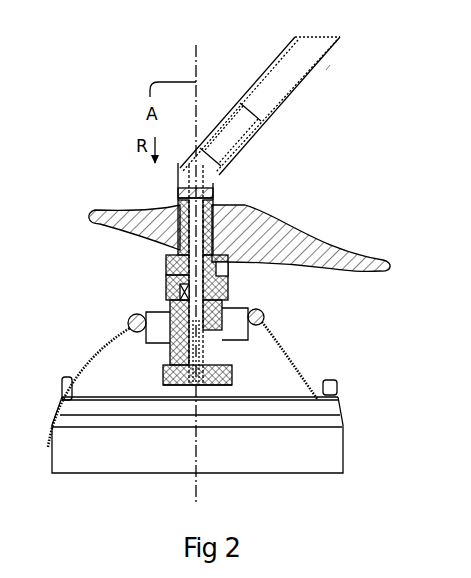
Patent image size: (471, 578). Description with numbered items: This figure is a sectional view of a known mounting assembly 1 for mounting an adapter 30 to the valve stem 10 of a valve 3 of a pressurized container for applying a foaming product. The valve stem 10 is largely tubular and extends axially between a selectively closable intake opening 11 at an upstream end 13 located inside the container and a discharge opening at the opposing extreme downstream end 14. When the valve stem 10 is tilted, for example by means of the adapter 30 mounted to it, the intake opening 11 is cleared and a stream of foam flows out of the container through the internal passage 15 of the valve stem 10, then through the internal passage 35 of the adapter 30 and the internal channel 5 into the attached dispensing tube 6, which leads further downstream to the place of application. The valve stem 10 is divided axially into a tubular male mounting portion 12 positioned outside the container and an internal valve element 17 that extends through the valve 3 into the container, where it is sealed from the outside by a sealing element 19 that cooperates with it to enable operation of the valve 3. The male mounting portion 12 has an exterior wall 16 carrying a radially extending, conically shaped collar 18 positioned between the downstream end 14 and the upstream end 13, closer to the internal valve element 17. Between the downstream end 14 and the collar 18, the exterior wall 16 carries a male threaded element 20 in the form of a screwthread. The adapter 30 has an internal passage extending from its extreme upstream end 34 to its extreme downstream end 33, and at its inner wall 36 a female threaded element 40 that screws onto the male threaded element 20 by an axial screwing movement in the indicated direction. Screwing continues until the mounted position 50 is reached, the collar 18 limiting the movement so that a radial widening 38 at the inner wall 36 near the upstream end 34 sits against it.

The mounting assembly 1 is at (77, 278).
The valve 3 is at (277, 313).
The internal channel 5 is at (272, 90).
The dispensing tube 6 is at (336, 66).
The valve stem 10 is at (177, 332).
The intake opening 11 is at (213, 366).
The male mounting portion 12 is at (176, 250).
The upstream end 13 is at (196, 390).
The downstream end 14 is at (191, 226).
The internal passage 15 is at (205, 323).
The exterior wall 16 is at (216, 257).
The internal valve element 17 is at (177, 367).
The collar 18 is at (224, 308).
The sealing element 19 is at (228, 358).
The male threaded element 20 is at (215, 263).
The adapter 30 is at (245, 210).
The extreme downstream end of the adapter 33 is at (257, 100).
The extreme upstream end of the adapter 34 is at (186, 294).
The internal passage of the adapter 35 is at (215, 204).
The inner wall 36 is at (207, 238).
The radial widening 38 is at (170, 293).
The female threaded element 40 is at (178, 266).
The mounted position 50 is at (227, 293).